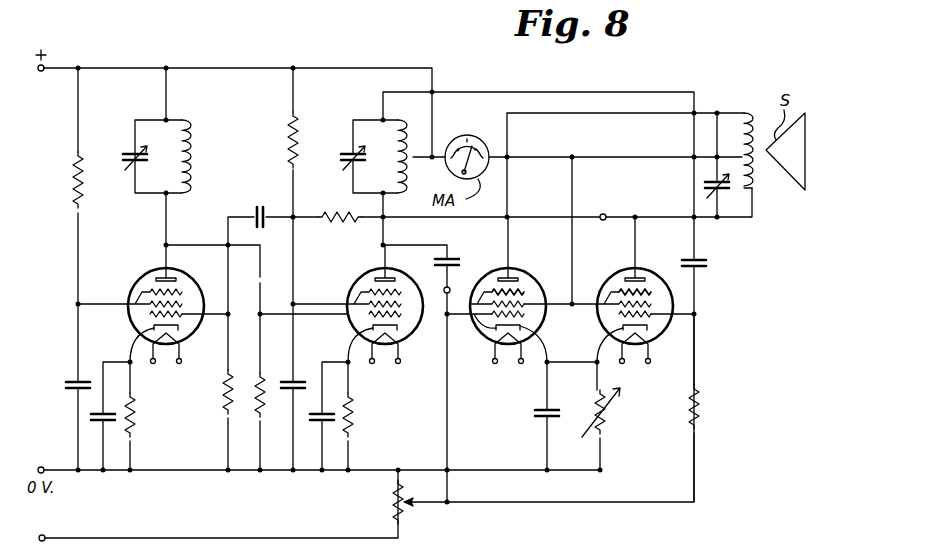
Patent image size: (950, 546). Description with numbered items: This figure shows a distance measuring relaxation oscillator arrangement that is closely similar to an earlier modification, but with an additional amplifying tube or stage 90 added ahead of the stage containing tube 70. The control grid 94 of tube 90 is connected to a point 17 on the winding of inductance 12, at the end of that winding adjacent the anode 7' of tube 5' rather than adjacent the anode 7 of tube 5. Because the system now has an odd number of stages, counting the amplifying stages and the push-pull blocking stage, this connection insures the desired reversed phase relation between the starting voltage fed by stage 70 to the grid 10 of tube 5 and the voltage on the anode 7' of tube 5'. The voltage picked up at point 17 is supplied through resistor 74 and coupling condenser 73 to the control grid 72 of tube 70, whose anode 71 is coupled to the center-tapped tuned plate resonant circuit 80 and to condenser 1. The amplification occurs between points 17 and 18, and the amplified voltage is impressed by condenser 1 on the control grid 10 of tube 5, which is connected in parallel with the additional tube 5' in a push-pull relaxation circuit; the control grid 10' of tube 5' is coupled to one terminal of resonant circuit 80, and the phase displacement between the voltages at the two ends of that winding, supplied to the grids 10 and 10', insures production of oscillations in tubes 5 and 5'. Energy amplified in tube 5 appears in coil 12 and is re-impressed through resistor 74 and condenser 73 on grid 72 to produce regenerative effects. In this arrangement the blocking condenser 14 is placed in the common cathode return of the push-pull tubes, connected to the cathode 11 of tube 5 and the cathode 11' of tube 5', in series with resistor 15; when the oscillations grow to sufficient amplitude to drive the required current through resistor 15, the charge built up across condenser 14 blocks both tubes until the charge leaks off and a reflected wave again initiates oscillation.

The coupling condenser 1 is at (453, 260).
The electron discharge tube 5 is at (522, 360).
The additional tube 5' is at (642, 312).
The anode 7 is at (521, 276).
The anode of tube 5' 7' is at (620, 282).
The control grid 10 is at (489, 339).
The control grid of tube 5' 10' is at (657, 339).
The cathode 11 is at (494, 352).
The cathode of tube 5' 11' is at (655, 353).
The inductance 12 is at (731, 125).
The blocking condenser 14 is at (539, 420).
The resistor 15 is at (607, 421).
The point 17 is at (605, 213).
The point 18 is at (451, 291).
The amplifier tube 70 is at (353, 357).
The anode 71 is at (389, 278).
The control grid 72 is at (412, 330).
The coupling condenser 73 is at (258, 207).
The resistor 74 is at (334, 223).
The plate resonant circuit 80 is at (380, 140).
The additional amplifying tube 90 is at (159, 357).
The control grid of tube 90 94 is at (182, 324).